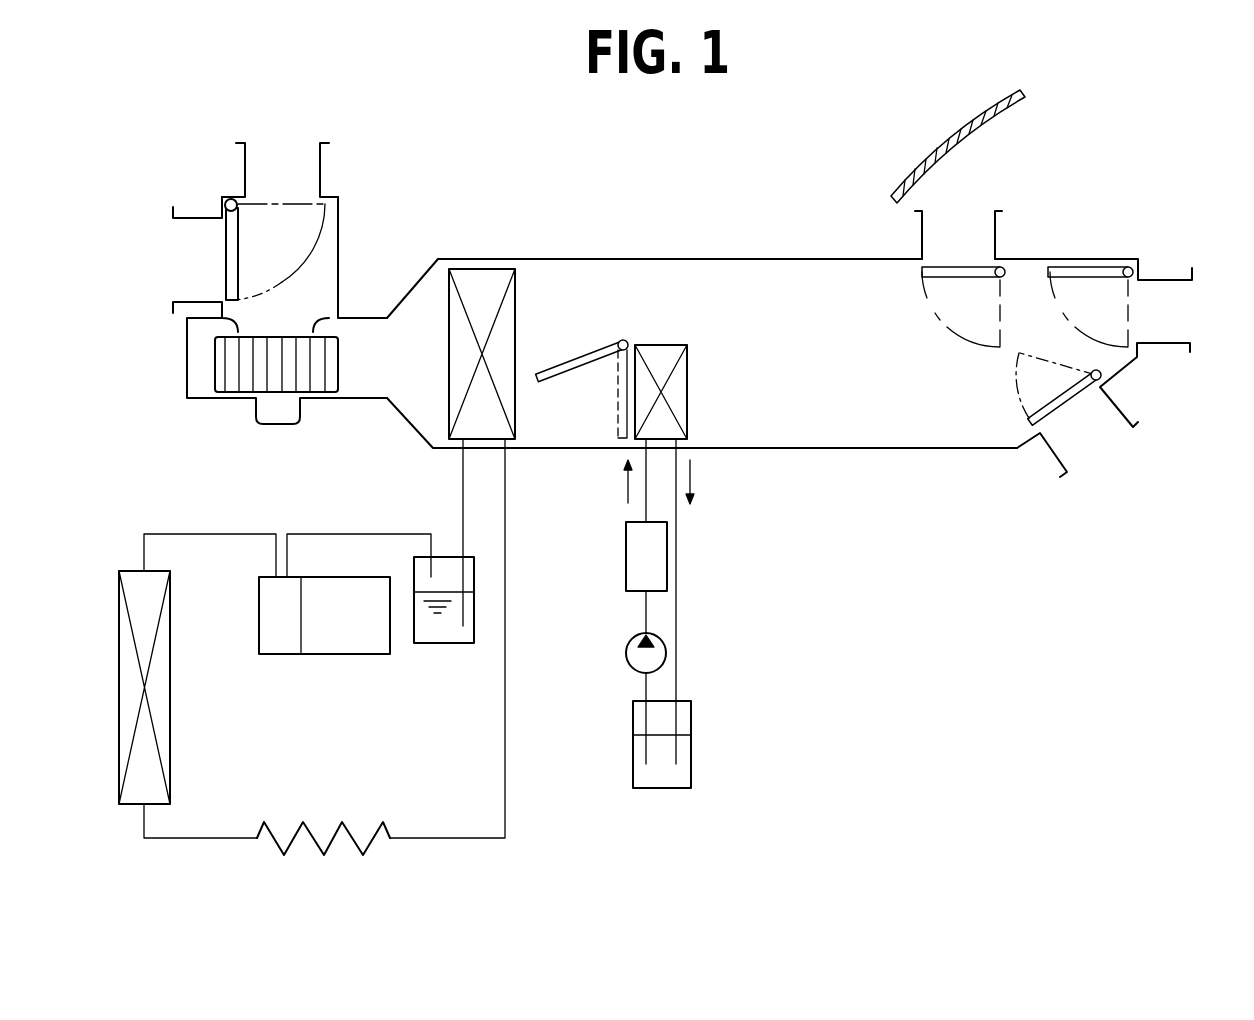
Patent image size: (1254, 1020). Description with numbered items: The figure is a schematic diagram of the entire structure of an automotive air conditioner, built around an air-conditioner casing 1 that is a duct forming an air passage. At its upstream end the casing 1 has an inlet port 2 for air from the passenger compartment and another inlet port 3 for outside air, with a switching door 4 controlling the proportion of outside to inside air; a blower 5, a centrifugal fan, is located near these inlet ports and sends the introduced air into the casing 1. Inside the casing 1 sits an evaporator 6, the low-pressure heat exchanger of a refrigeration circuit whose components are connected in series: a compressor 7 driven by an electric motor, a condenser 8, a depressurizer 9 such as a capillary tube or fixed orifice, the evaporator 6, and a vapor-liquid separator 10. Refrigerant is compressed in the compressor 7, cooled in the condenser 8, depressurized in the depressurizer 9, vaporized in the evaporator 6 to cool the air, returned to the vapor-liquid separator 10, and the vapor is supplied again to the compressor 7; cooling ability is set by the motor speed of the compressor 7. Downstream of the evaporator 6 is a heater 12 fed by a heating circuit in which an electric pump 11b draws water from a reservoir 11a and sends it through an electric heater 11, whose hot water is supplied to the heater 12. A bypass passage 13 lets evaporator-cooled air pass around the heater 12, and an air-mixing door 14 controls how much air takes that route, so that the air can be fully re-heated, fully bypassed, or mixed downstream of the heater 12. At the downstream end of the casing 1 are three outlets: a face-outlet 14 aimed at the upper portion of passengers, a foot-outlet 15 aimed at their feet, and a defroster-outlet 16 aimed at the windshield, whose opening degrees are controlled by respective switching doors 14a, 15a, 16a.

The air-conditioner casing 1 is at (562, 259).
The inlet port 2 is at (195, 240).
The inlet port 3 is at (282, 162).
The switching door 4 is at (224, 266).
The blower 5 is at (277, 406).
The evaporator 6 is at (481, 281).
The compressor 7 is at (342, 655).
The condenser 8 is at (170, 701).
The depressurizer 9 is at (324, 858).
The vapor-liquid separator 10 is at (442, 643).
The electric heater 11 is at (624, 558).
The reservoir 11a is at (661, 790).
The electric pump 11b is at (624, 655).
The heater 12 is at (687, 407).
The bypass passage 13 is at (712, 283).
The air-mixing door 14 is at (557, 375).
The switching door 14a is at (1092, 263).
The foot-outlet 15 is at (1093, 440).
The switching door 15a is at (1053, 410).
The defroster-outlet 16 is at (955, 225).
The switching door 16a is at (967, 265).